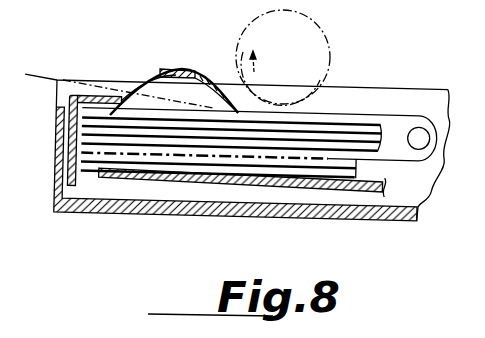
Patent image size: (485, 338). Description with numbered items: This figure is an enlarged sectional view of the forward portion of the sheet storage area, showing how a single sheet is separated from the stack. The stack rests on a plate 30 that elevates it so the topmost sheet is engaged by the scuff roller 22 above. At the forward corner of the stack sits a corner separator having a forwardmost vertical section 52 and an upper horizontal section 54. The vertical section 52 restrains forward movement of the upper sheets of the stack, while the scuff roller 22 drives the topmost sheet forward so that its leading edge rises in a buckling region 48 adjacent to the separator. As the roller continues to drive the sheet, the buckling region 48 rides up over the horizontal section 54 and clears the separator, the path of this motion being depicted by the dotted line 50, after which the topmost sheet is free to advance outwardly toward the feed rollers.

The scuff roller 22 is at (330, 43).
The plate 30 is at (205, 178).
The buckling region 48 is at (170, 70).
The dotted line 50 is at (55, 79).
The forwardmost vertical section 52 is at (68, 129).
The upper horizontal section 54 is at (99, 100).